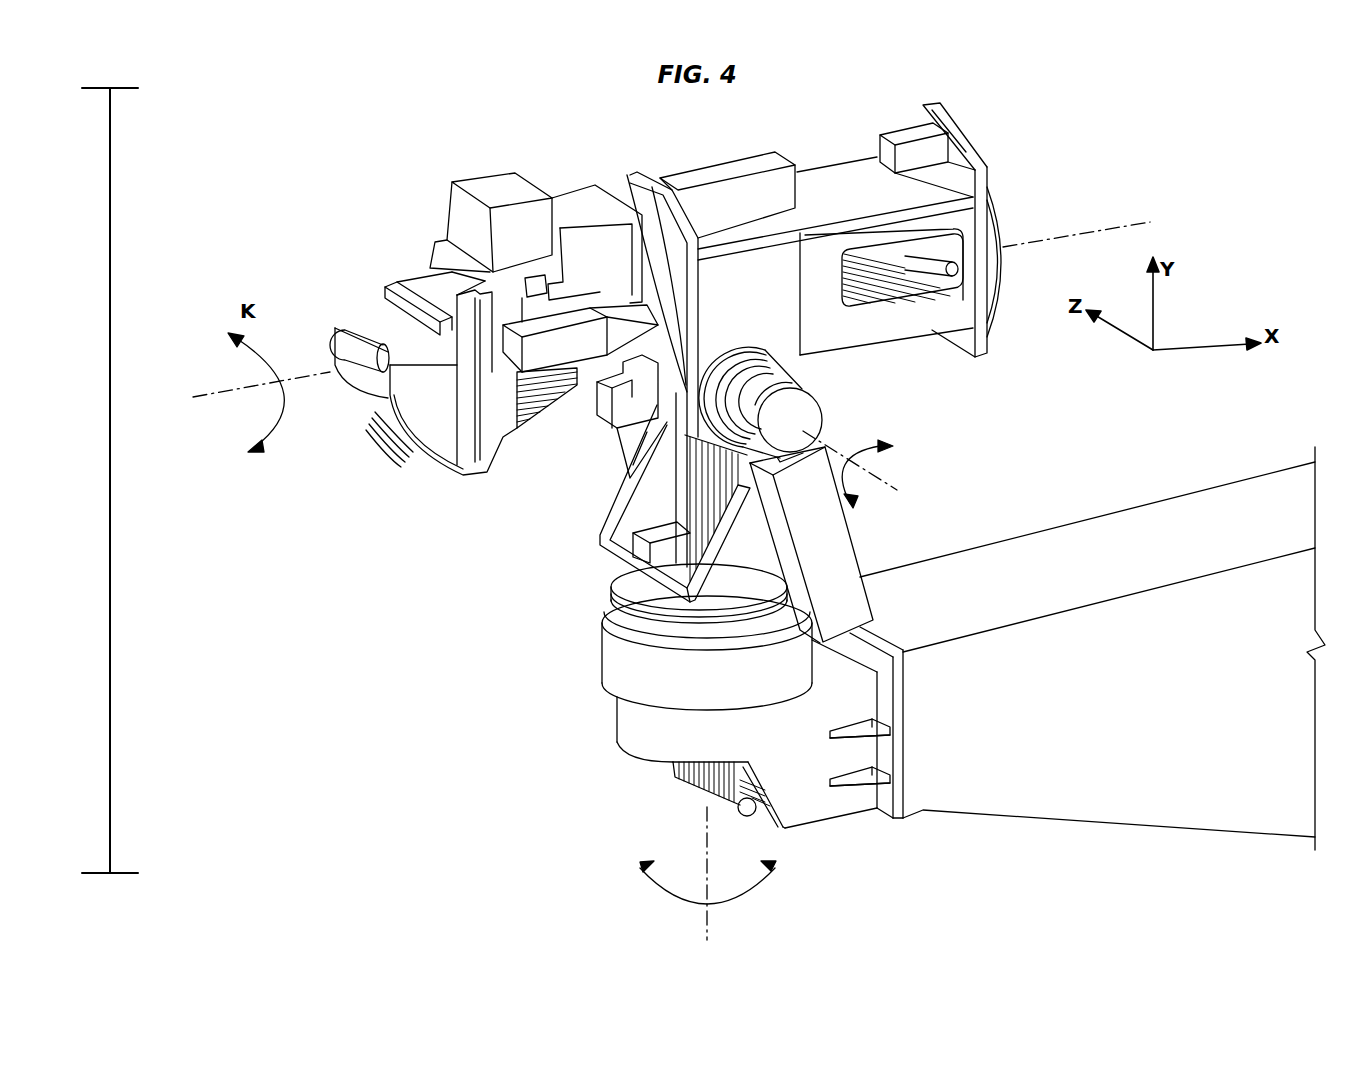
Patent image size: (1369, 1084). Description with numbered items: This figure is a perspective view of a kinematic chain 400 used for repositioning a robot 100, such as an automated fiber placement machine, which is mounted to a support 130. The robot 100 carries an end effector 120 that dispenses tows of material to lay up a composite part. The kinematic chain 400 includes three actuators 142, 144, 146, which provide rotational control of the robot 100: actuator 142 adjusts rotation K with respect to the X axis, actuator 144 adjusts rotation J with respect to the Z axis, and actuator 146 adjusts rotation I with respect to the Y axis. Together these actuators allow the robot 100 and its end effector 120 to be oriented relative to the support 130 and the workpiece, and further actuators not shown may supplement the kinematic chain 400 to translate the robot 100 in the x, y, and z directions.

The robot 100 is at (1062, 116).
The end effector 120 is at (1003, 222).
The support 130 is at (1224, 492).
The actuator 142 is at (651, 237).
The actuator 144 is at (811, 414).
The actuator 146 is at (612, 608).
The kinematic chain 400 is at (111, 210).